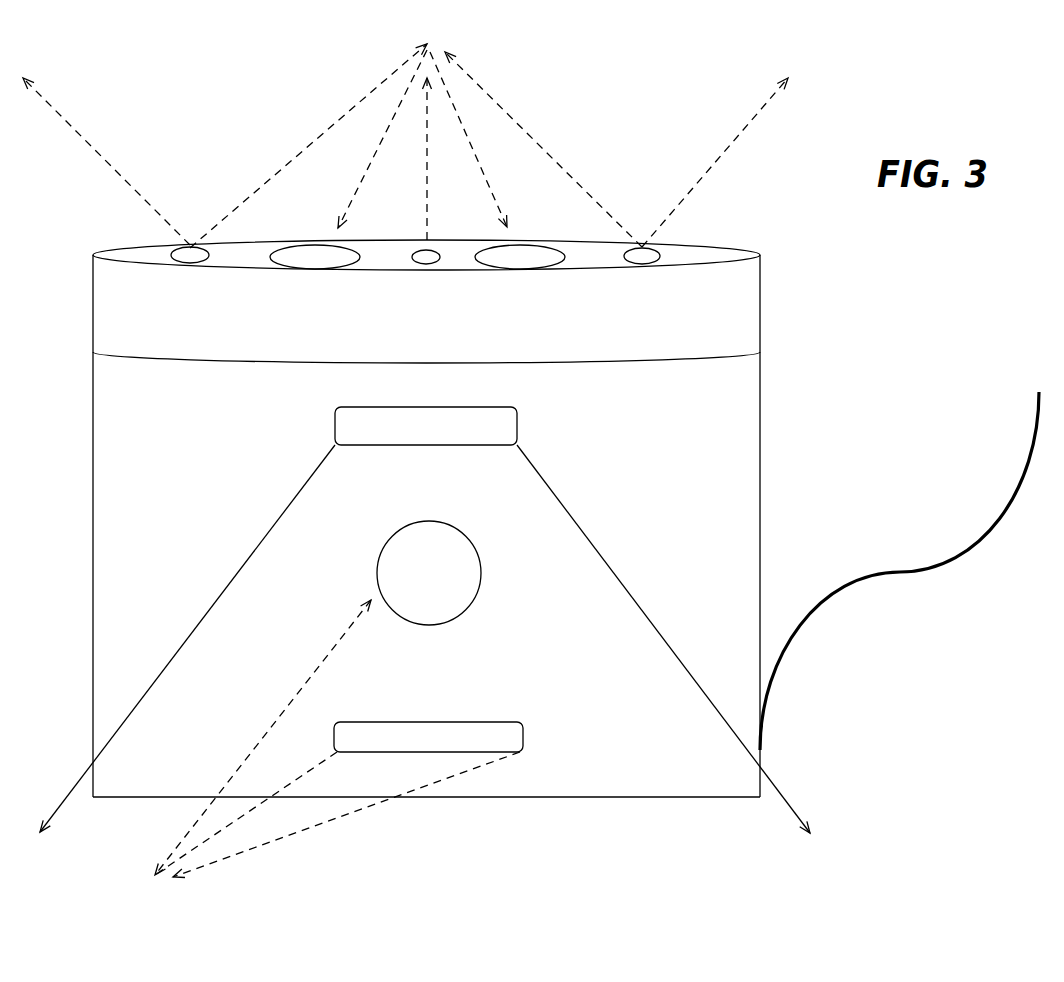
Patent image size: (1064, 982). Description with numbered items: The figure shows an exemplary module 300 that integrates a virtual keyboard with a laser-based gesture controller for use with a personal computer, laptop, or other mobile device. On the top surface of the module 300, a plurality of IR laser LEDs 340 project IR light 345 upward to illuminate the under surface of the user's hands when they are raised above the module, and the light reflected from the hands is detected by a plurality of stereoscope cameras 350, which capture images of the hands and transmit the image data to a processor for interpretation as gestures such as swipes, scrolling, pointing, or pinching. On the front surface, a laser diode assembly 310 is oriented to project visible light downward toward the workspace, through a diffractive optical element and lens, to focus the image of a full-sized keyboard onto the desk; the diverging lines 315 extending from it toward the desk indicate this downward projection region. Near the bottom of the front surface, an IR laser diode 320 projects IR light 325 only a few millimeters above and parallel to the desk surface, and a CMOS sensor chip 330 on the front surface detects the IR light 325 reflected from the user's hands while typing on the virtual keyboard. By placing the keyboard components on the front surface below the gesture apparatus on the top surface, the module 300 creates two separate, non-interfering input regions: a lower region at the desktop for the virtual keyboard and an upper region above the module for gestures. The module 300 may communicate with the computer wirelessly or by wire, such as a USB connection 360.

The module 300 is at (785, 377).
The laser diode assembly 310 is at (535, 421).
The field of view lines 315 is at (191, 621).
The IR laser diode 320 is at (552, 725).
The IR light 325 is at (224, 815).
The CMOS sensor chip 330 is at (490, 573).
The IR laser LEDs 340 is at (197, 278).
The IR light 345 is at (165, 155).
The stereoscope cameras 350 is at (294, 325).
The USB connection 360 is at (900, 643).